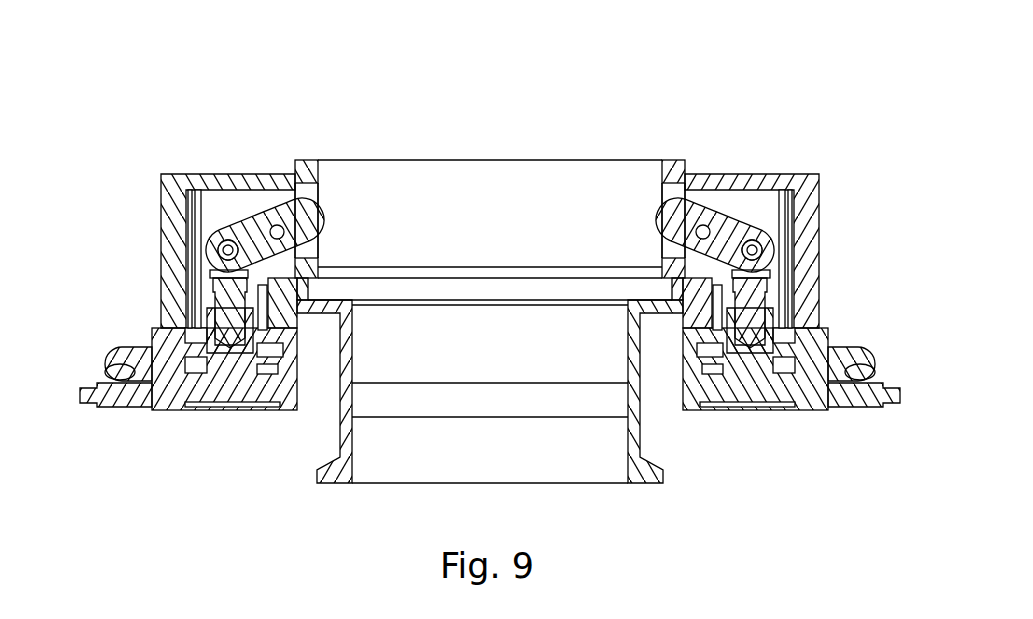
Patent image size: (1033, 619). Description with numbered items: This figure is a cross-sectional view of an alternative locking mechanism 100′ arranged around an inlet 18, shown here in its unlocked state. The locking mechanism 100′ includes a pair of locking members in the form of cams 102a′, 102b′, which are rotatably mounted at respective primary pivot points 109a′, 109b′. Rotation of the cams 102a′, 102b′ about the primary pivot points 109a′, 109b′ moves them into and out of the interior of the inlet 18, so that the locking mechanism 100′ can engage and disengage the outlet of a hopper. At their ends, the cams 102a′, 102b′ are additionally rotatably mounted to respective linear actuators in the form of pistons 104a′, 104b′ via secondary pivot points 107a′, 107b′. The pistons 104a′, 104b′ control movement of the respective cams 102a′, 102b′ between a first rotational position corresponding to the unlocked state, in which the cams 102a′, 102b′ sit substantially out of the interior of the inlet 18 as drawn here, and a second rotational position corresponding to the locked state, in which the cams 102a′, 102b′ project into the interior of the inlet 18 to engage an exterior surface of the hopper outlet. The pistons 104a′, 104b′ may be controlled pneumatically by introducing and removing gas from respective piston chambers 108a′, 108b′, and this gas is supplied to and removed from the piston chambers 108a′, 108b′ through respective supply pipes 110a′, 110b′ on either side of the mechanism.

The inlet 18 is at (690, 168).
The locking mechanism 100′ is at (698, 469).
The cam 102a′ is at (702, 212).
The cam 102b′ is at (293, 215).
The piston 104a′ is at (756, 300).
The piston 104b′ is at (228, 302).
The secondary pivot point 107a′ is at (762, 262).
The secondary pivot point 107b′ is at (222, 235).
The piston chamber 108a′ is at (803, 243).
The piston chamber 108b′ is at (190, 230).
The primary pivot point 109a′ is at (748, 222).
The primary pivot point 109b′ is at (262, 226).
The supply pipe 110a′ is at (867, 406).
The supply pipe 110b′ is at (86, 400).